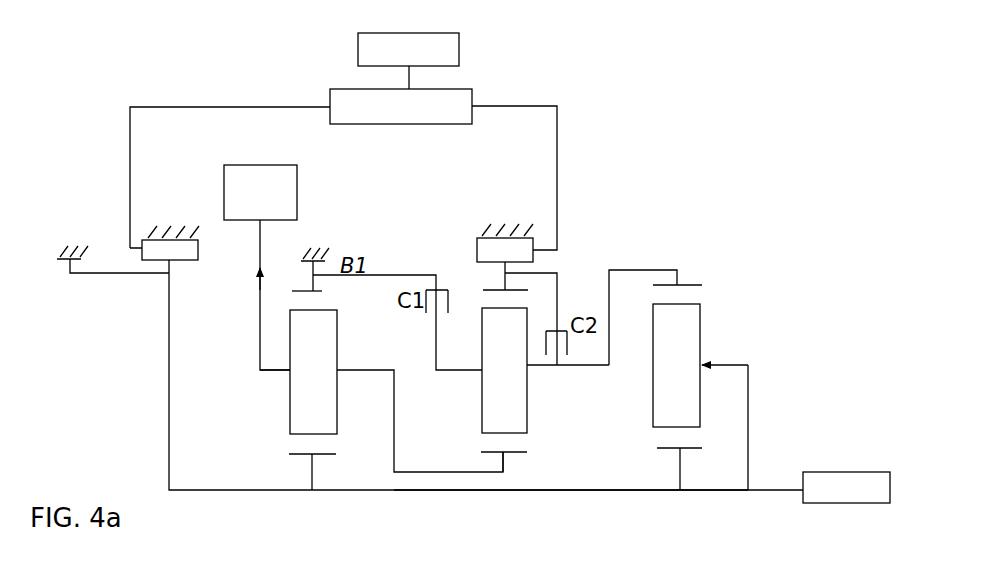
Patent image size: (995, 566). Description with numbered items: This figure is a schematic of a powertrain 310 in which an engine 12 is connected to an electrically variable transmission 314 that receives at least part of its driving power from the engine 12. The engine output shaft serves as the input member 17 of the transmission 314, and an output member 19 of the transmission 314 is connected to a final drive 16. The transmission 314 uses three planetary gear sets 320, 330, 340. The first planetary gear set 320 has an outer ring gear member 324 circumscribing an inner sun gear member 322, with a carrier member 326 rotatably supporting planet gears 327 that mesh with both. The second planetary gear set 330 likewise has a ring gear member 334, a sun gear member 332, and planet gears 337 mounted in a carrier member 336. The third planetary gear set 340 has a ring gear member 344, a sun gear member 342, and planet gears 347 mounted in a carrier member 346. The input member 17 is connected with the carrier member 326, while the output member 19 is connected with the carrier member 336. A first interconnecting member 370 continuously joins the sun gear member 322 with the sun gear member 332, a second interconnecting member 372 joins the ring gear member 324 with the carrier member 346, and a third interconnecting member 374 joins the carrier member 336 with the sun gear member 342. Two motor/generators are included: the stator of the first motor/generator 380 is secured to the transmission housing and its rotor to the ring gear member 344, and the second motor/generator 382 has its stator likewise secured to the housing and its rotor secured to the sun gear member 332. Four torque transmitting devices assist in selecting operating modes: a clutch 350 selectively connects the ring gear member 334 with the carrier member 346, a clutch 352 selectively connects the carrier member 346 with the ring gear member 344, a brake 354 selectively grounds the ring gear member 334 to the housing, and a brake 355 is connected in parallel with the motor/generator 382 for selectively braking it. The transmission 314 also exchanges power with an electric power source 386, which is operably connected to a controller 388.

The powertrain 310 is at (80, 56).
The electrically variable transmission 314 is at (78, 111).
The electric power source 386 is at (459, 47).
The controller 388 is at (472, 100).
The final drive 16 is at (280, 165).
The output member 19 is at (260, 246).
The second motor/generator 382 is at (201, 254).
The first motor/generator 380 is at (475, 240).
The brake 355 is at (56, 262).
The brake 354 is at (327, 256).
The ring gear member 334 is at (325, 292).
The clutch 350 is at (431, 317).
The planet gears 337 is at (313, 372).
The carrier member 336 is at (283, 375).
The third interconnecting member 374 is at (360, 368).
The second planetary gear set 330 is at (306, 458).
The sun gear member 332 is at (328, 456).
The ring gear member 344 is at (482, 290).
The clutch 352 is at (567, 364).
The planet gears 347 is at (504, 370).
The carrier member 346 is at (531, 378).
The third planetary gear set 340 is at (497, 458).
The sun gear member 342 is at (518, 455).
The second interconnecting member 372 is at (650, 268).
The ring gear member 324 is at (690, 283).
The planet gears 327 is at (676, 365).
The carrier member 326 is at (706, 354).
The first planetary gear set 320 is at (676, 454).
The sun gear member 322 is at (690, 450).
The first interconnecting member 370 is at (582, 488).
The input member 17 is at (790, 488).
The engine 12 is at (823, 472).